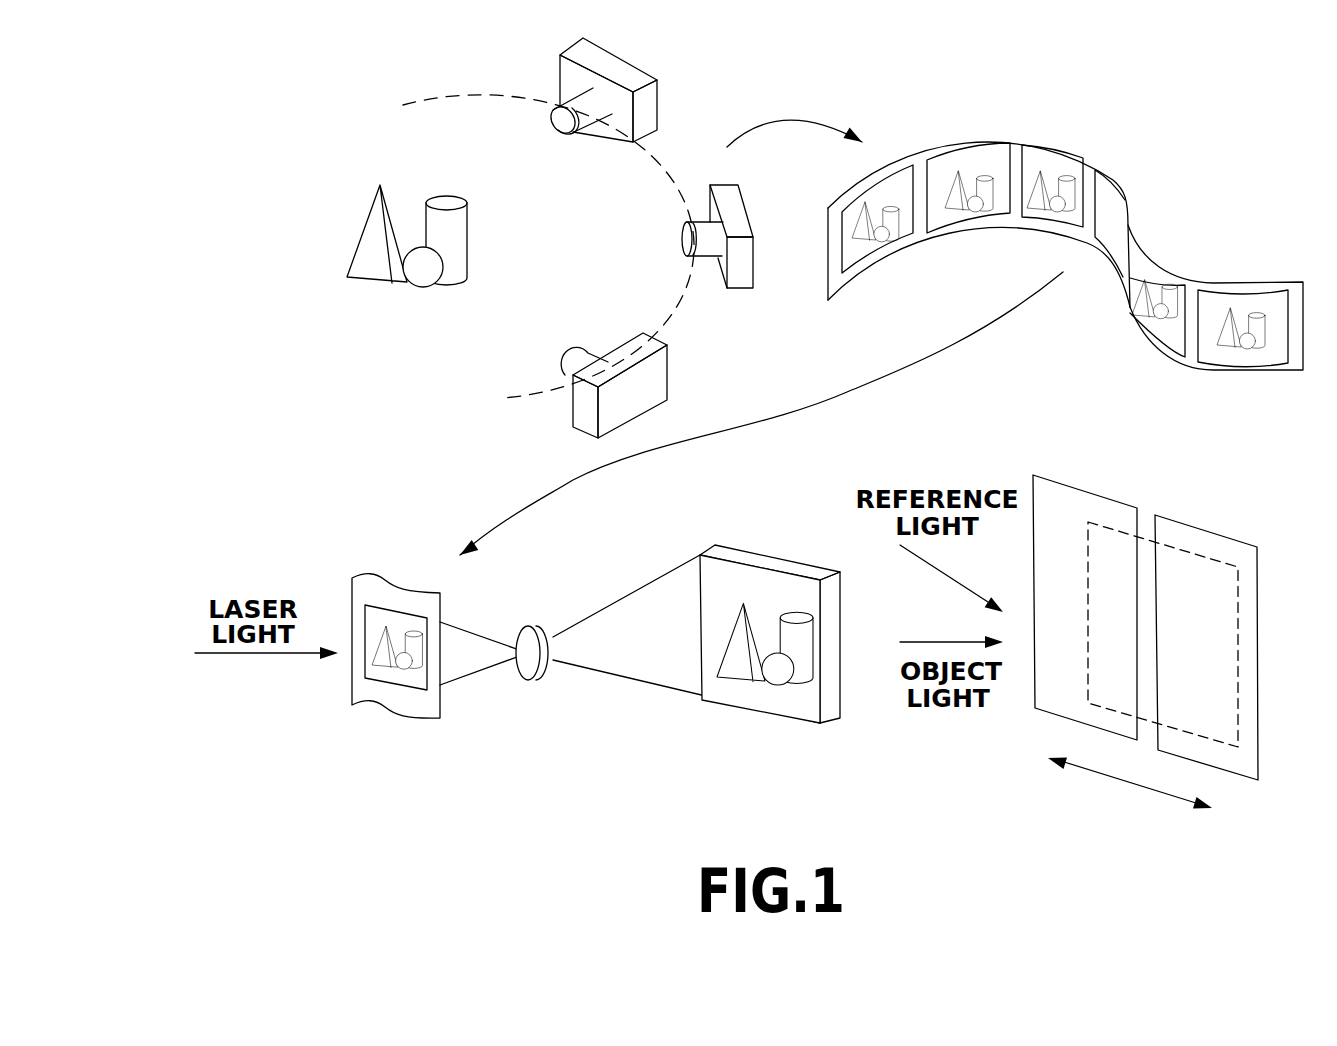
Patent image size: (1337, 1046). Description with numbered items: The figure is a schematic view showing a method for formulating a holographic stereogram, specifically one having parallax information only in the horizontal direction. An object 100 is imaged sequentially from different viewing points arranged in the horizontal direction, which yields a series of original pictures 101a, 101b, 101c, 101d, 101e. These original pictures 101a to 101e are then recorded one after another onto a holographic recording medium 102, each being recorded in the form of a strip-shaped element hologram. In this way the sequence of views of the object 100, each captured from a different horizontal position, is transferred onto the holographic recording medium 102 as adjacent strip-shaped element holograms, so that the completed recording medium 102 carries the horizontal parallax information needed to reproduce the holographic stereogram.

The object to be recorded 100 is at (340, 222).
The original picture 101a is at (897, 180).
The original picture 101b is at (983, 153).
The original picture 101c is at (1058, 160).
The original picture 101d is at (1152, 282).
The original picture 101e is at (1260, 300).
The holographic recording medium 102 is at (1113, 532).